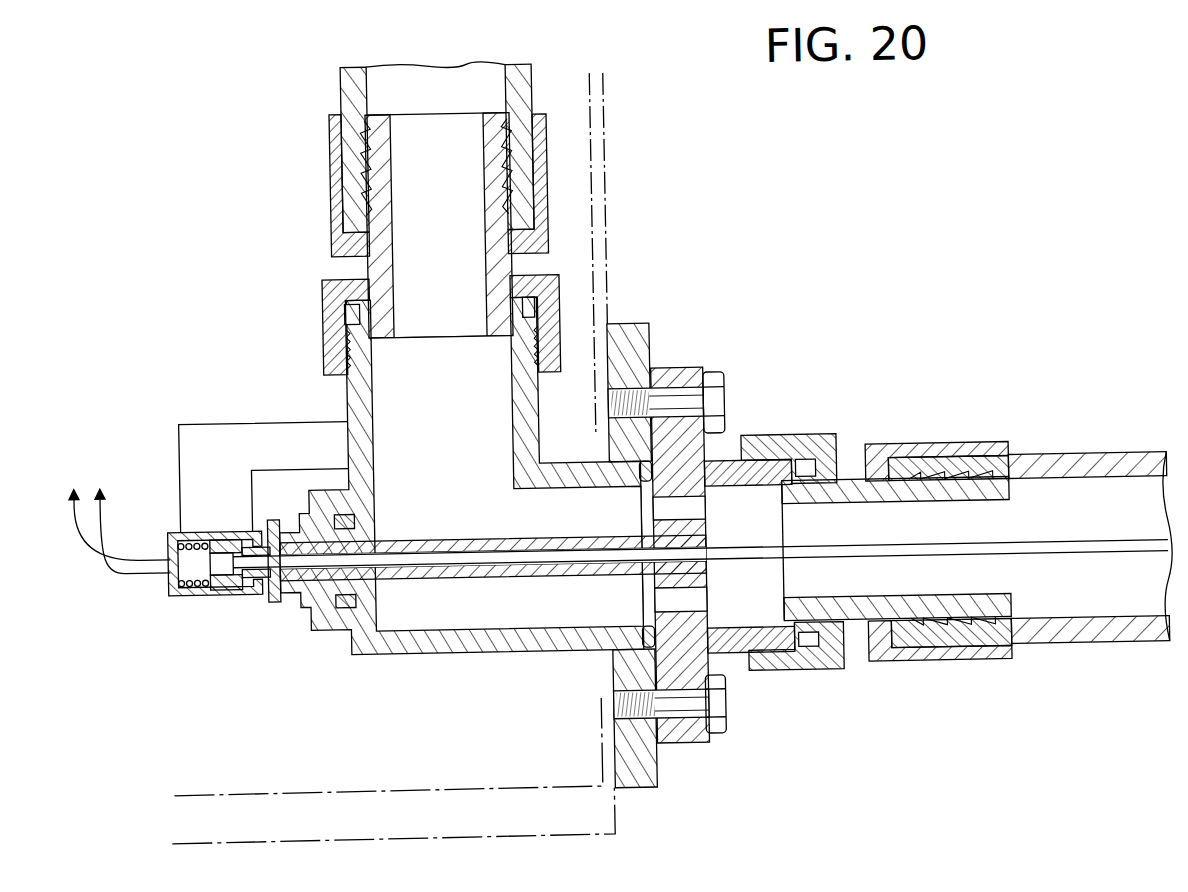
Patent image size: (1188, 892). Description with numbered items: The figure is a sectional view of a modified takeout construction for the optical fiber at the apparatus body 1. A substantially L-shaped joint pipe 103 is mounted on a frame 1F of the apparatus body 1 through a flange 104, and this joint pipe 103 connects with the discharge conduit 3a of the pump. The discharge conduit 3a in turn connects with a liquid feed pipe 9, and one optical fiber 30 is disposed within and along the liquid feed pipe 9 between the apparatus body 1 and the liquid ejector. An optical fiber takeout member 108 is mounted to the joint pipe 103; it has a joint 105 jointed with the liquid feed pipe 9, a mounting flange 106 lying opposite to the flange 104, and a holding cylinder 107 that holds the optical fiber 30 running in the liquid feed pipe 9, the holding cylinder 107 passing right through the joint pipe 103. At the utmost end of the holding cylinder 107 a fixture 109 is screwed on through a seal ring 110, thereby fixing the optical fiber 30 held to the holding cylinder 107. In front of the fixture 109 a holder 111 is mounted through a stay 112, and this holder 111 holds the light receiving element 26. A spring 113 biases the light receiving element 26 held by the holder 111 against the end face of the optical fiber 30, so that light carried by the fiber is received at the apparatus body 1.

The apparatus body 1 is at (623, 128).
The frame 1F is at (606, 192).
The discharge conduit 3a is at (401, 73).
The liquid feed pipe 9 is at (1088, 461).
The light receiving element 26 is at (221, 571).
The optical fiber 30 is at (1067, 572).
The joint pipe 103 is at (350, 398).
The flange 104 is at (640, 328).
The joint 105 is at (772, 496).
The mounting flange 106 is at (684, 374).
The holding cylinder 107 is at (478, 537).
The optical fiber takeout member 108 is at (726, 462).
The fixture 109 is at (255, 576).
The seal ring 110 is at (282, 596).
The holder 111 is at (212, 583).
The stay 112 is at (181, 454).
The spring 113 is at (175, 585).